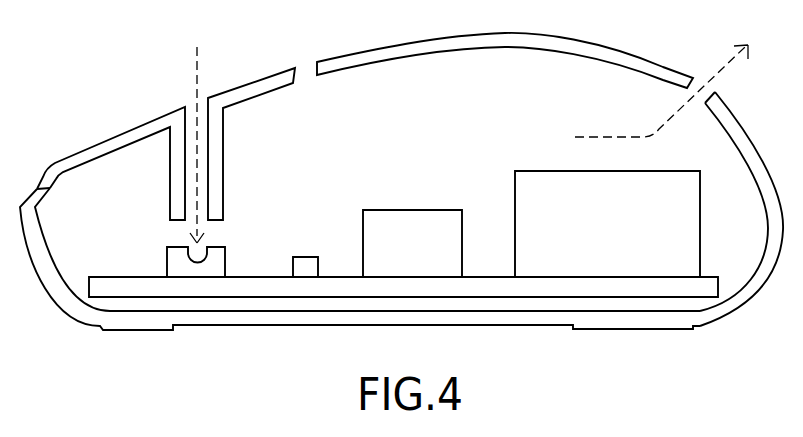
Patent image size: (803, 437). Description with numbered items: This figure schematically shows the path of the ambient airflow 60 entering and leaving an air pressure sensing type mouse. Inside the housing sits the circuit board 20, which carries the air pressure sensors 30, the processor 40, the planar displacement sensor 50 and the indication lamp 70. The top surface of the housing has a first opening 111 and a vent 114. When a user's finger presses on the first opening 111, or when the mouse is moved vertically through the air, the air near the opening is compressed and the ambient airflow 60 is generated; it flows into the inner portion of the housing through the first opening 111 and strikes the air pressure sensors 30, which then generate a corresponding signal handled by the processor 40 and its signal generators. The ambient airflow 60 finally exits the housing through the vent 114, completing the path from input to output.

The circuit board 20 is at (260, 287).
The air pressure sensors 30 is at (163, 231).
The processor 40 is at (418, 222).
The planar displacement sensor 50 is at (567, 182).
The ambient airflow 60 is at (200, 73).
The indication lamp 70 is at (307, 267).
The first opening 111 is at (193, 112).
The vent 114 is at (712, 92).